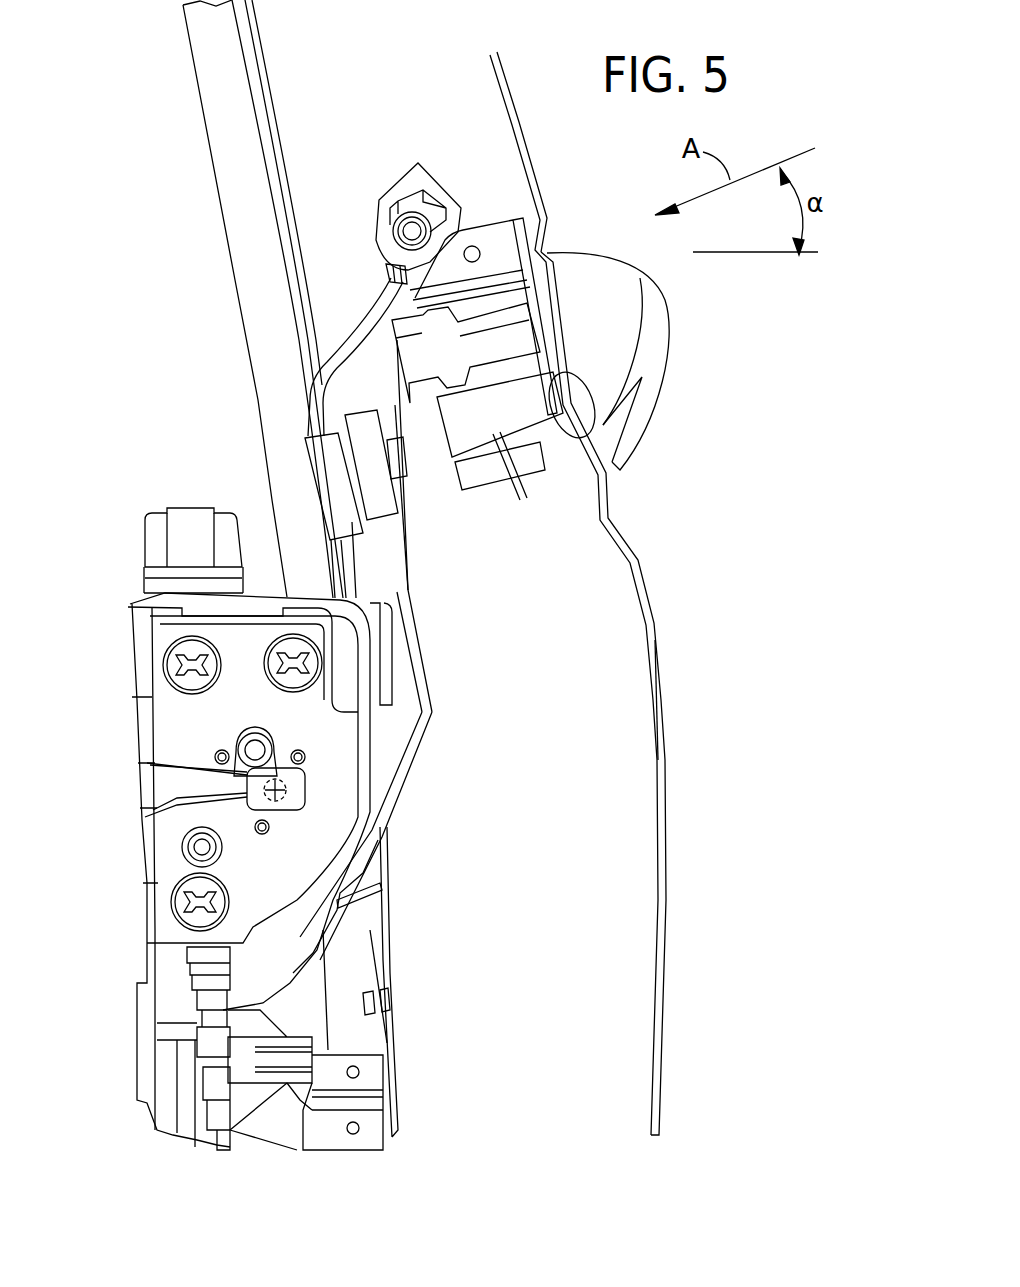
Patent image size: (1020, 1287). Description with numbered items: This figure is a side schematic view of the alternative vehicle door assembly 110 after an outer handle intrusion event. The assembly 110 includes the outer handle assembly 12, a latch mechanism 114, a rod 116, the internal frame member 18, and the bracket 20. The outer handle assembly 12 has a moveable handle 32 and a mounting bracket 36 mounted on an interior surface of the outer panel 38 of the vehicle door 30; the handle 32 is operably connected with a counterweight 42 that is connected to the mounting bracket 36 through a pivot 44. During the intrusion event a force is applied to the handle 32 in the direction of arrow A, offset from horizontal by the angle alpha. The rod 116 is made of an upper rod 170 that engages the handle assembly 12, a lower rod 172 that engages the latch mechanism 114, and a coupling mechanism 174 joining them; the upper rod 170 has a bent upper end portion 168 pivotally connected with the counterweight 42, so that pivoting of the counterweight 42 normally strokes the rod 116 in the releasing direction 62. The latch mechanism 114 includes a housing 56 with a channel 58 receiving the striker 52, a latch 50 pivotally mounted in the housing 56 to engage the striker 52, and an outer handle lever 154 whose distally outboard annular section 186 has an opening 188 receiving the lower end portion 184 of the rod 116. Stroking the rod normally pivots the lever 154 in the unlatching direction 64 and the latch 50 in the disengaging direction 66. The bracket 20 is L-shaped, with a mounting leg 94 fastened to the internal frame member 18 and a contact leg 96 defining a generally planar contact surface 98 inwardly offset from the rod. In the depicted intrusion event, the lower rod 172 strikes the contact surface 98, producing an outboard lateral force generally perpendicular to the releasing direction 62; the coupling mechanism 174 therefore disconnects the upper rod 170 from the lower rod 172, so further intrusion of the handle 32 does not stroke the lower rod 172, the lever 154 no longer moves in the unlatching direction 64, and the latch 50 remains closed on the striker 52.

The outer handle assembly 12 is at (697, 328).
The internal frame member 18 is at (250, 286).
The bracket 20 is at (372, 590).
The vehicle door 30 is at (700, 840).
The moveable handle 32 is at (652, 384).
The mounting bracket 36 is at (590, 420).
The outer panel 38 is at (664, 770).
The counterweight 42 is at (432, 170).
The pivot 44 is at (471, 250).
The latch 50 is at (247, 787).
The striker 52 is at (288, 791).
The housing 56 is at (143, 645).
The channel 58 is at (158, 805).
The releasing direction 62 is at (508, 822).
The unlatching direction 64 is at (478, 918).
The disengaging direction 66 is at (285, 718).
The mounting leg 94 is at (322, 598).
The contact leg 96 is at (394, 624).
The contact surface 98 is at (410, 669).
The vehicle door assembly 110 is at (138, 410).
The latch mechanism 114 is at (110, 693).
The rod 116 is at (418, 525).
The outer handle lever 154 is at (373, 917).
The bent upper end portion 168 is at (406, 232).
The upper rod 170 is at (372, 314).
The lower rod 172 is at (412, 725).
The coupling mechanism 174 is at (298, 464).
The lower end portion 184 is at (380, 830).
The annular section 186 is at (384, 885).
The opening 188 is at (378, 862).